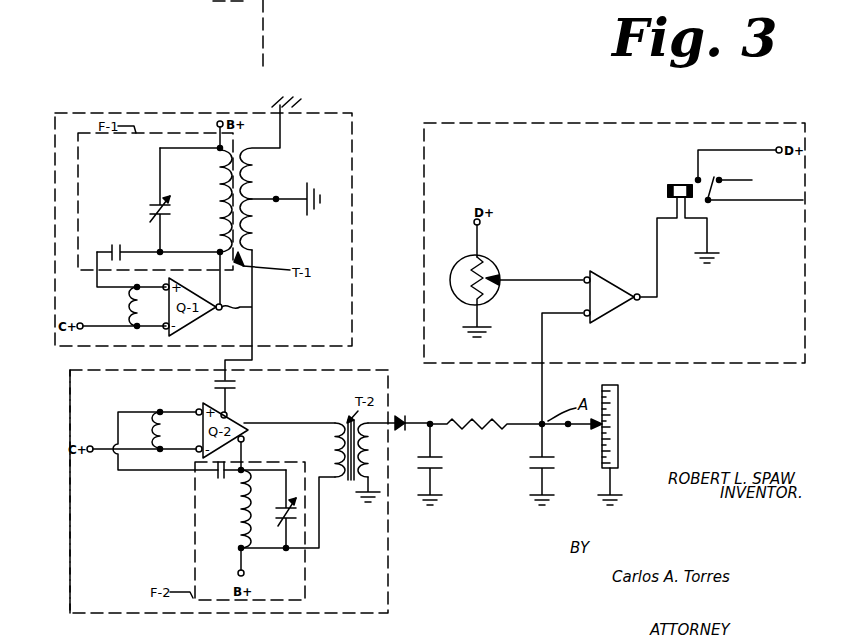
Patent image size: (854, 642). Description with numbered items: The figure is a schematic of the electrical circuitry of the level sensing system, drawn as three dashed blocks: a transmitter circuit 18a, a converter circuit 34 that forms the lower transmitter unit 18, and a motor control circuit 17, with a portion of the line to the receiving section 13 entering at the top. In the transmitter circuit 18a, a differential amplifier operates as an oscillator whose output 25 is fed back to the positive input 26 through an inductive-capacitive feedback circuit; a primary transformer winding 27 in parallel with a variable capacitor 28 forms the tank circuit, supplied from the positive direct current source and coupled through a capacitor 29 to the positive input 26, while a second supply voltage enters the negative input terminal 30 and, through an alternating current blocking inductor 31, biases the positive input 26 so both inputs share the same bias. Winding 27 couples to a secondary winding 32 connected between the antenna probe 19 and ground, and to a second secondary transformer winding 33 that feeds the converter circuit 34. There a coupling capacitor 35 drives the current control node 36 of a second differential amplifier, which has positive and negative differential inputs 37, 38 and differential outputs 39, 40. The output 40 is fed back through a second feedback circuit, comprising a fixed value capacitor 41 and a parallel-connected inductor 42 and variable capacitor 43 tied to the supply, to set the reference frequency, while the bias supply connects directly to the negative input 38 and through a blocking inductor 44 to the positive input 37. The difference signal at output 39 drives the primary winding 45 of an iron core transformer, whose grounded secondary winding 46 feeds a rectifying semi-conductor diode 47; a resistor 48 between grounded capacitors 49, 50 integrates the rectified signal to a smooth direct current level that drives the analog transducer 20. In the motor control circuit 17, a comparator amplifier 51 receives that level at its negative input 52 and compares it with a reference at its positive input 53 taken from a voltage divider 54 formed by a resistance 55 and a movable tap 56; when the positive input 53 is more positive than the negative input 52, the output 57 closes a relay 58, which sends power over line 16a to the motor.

The receiver section 13 is at (198, 34).
The line 16a is at (763, 200).
The motor control circuit 17 is at (569, 123).
The transmitter unit 18 is at (68, 590).
The transmitter circuit 18a is at (88, 113).
The antenna probe 19 is at (301, 103).
The analog transducer 20 is at (602, 392).
The output 25 is at (254, 310).
The positive input 26 is at (164, 284).
The primary transformer winding 27 is at (218, 164).
The variable capacitor 28 is at (155, 204).
The capacitor 29 is at (108, 247).
The negative input terminal 30 is at (163, 329).
The A.C. blocking inductor 31 is at (129, 306).
The secondary winding 32 is at (262, 160).
The second secondary transformer winding 33 is at (256, 234).
The converter circuit 34 is at (70, 405).
The coupling capacitor 35 is at (213, 387).
The current control node 36 is at (233, 415).
The positive differential input 37 is at (195, 410).
The negative differential input 38 is at (196, 452).
The differential output 39 is at (252, 421).
The differential output 40 is at (246, 441).
The fixed value capacitor 41 is at (222, 479).
The inductor 42 is at (238, 528).
The variable capacitor 43 is at (285, 520).
The blocking inductor 44 is at (156, 447).
The primary winding 45 is at (333, 444).
The secondary winding 46 is at (404, 432).
The rectifying semi-conductor diode 47 is at (406, 418).
The resistor 48 is at (481, 416).
The capacitor 49 is at (443, 458).
The capacitor 50 is at (553, 458).
The amplifier 51 is at (606, 312).
The negative input 52 is at (586, 317).
The positive input 53 is at (587, 277).
The voltage divider 54 is at (505, 263).
The resistance 55 is at (462, 302).
The movable tap 56 is at (496, 293).
The output 57 is at (641, 300).
The relay 58 is at (678, 185).